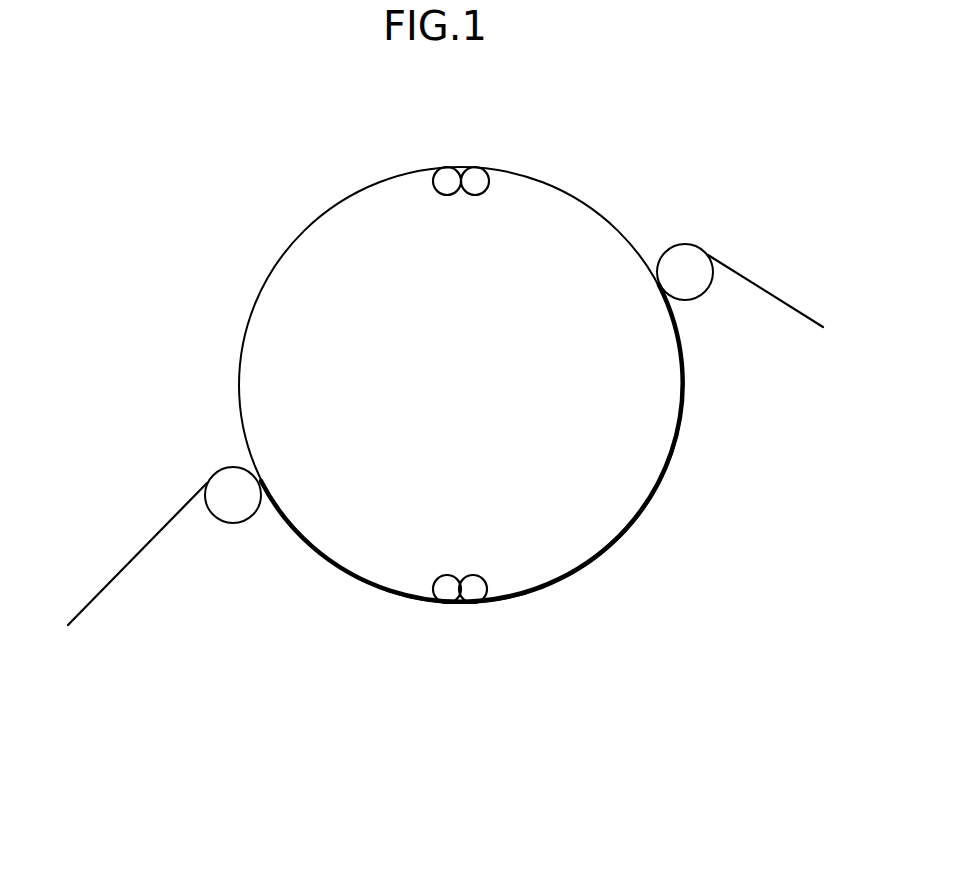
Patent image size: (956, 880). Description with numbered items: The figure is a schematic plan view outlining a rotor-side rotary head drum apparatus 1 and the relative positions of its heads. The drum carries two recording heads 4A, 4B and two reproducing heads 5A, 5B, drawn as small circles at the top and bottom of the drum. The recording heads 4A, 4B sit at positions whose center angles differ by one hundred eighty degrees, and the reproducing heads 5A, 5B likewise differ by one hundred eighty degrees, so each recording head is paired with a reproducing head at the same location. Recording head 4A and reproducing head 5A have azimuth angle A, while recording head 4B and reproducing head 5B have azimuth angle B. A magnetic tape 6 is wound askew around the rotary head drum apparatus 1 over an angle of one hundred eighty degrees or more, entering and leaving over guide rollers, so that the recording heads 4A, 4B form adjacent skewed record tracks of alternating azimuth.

The rotary head drum apparatus 1 is at (583, 207).
The recording head 4A is at (475, 173).
The reproducing head 5A is at (447, 173).
The recording head 4B is at (447, 598).
The reproducing head 5B is at (474, 598).
The magnetic tape 6 is at (145, 546).